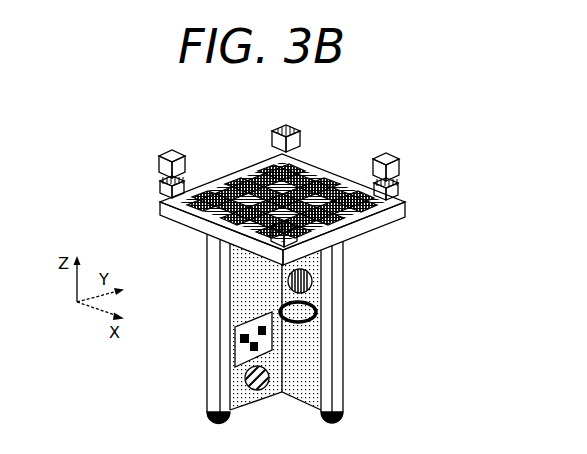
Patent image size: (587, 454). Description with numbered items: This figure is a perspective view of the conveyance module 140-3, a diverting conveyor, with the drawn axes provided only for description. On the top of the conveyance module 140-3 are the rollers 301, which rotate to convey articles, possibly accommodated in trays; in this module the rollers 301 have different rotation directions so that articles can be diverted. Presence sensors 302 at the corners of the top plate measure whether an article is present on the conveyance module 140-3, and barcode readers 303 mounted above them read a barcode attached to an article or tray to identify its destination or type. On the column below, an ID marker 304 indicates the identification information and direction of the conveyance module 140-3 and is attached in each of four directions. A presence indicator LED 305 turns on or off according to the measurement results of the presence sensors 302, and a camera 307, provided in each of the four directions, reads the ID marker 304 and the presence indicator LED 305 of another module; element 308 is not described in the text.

The conveyance module 140-3 is at (282, 263).
The rollers 301 is at (282, 179).
The presence sensors 302 is at (280, 185).
The barcode readers 303 is at (280, 161).
The ID markers 304 is at (217, 339).
The presence indicator LED 305 is at (264, 397).
The camera 307 is at (331, 322).
The speaker 308 is at (335, 285).